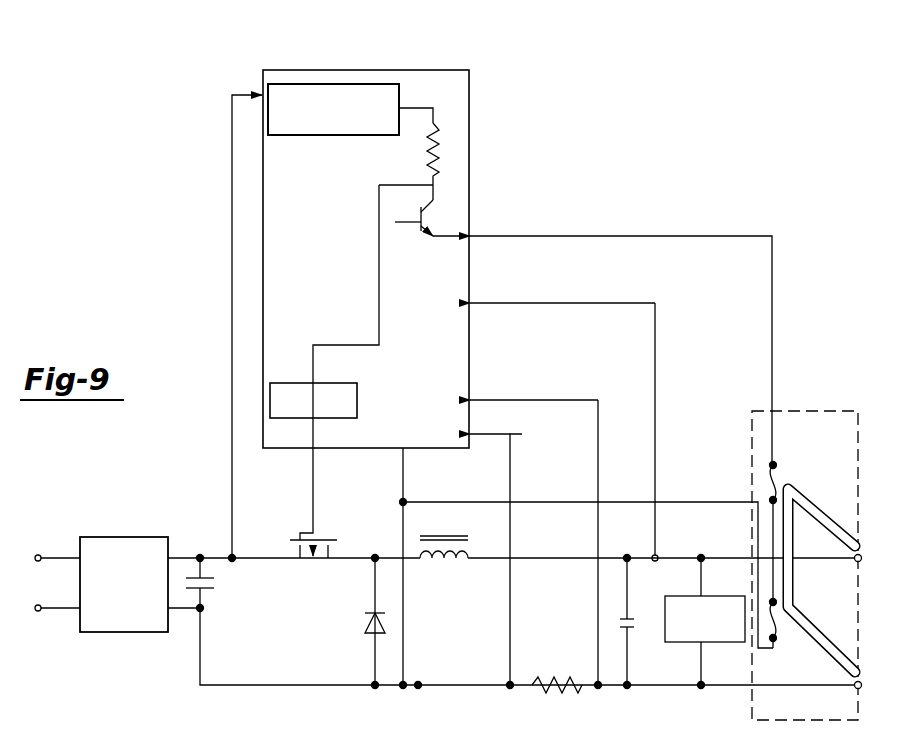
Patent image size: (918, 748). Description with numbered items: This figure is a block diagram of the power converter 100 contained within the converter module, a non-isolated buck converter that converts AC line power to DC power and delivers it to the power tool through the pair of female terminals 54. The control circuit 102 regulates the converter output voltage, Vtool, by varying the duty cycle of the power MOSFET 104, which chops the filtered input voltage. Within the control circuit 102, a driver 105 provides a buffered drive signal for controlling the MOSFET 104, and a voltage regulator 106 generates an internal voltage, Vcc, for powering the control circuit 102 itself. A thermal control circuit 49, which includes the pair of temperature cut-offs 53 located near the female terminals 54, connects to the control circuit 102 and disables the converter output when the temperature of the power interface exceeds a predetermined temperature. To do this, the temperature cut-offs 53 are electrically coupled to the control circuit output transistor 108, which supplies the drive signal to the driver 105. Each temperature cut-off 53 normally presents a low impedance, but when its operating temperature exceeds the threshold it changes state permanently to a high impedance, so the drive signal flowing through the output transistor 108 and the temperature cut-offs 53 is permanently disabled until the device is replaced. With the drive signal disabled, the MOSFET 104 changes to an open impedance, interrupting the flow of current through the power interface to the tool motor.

The converter 100 is at (566, 206).
The control circuit 102 is at (367, 69).
The power MOSFET 104 is at (319, 563).
The driver 105 is at (330, 383).
The voltage regulator 106 is at (318, 137).
The control circuit output transistor 108 is at (413, 234).
The thermal control circuit 49 is at (812, 410).
The temperature cut-offs (TCOs) 53 is at (768, 481).
The female terminals 54 is at (861, 562).